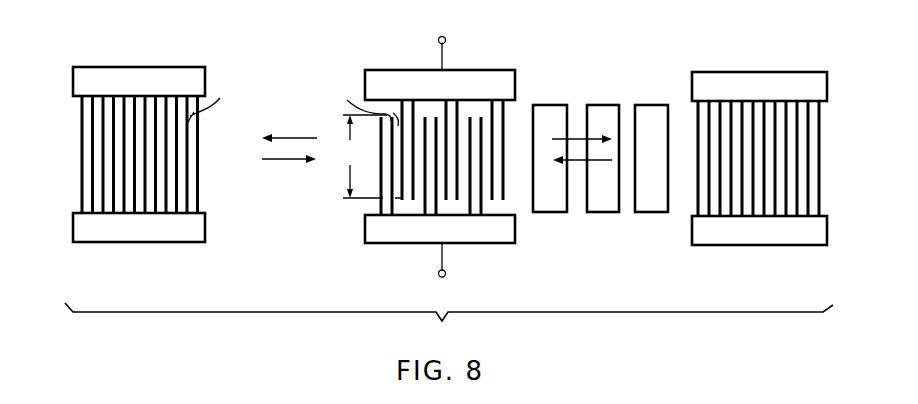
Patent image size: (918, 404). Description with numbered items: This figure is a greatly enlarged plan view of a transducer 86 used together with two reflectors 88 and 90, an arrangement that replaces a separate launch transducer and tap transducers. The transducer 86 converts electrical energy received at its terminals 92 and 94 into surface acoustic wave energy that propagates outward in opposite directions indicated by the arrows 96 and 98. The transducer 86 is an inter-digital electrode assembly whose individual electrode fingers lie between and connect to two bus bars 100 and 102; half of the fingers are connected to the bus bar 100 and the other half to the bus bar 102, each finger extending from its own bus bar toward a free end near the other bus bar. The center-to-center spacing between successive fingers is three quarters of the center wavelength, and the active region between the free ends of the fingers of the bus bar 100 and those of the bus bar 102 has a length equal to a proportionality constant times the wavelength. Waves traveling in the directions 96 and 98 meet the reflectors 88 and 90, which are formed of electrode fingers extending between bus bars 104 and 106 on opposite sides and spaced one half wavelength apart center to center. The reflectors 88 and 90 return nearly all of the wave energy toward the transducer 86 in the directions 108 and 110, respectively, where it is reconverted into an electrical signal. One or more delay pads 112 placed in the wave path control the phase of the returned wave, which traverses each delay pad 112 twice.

The transducer 86 is at (440, 157).
The reflector 88 is at (450, 159).
The reflector 90 is at (688, 202).
The terminal 92 is at (442, 38).
The terminal 94 is at (442, 275).
The arrow indicating direction of surface acoustic wave propagation 96 is at (291, 139).
The arrow indicating direction of surface acoustic wave propagation 98 is at (576, 133).
The bus bar 100 is at (500, 82).
The bus bar 102 is at (503, 235).
The bus bar 104 is at (195, 78).
The bus bar 106 is at (195, 237).
The direction of reflected surface acoustic wave 108 is at (286, 158).
The direction of reflected surface acoustic wave 110 is at (577, 163).
The delay pad 112 is at (645, 112).